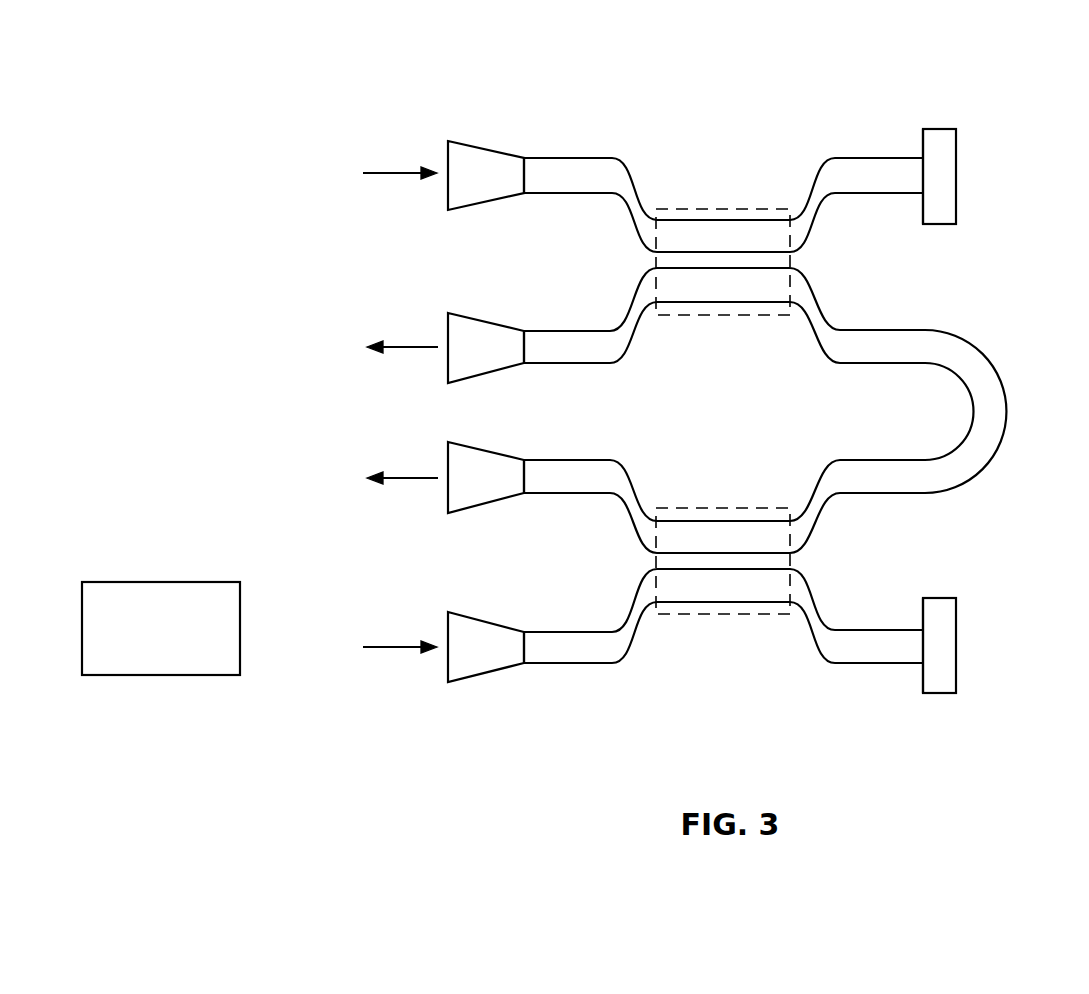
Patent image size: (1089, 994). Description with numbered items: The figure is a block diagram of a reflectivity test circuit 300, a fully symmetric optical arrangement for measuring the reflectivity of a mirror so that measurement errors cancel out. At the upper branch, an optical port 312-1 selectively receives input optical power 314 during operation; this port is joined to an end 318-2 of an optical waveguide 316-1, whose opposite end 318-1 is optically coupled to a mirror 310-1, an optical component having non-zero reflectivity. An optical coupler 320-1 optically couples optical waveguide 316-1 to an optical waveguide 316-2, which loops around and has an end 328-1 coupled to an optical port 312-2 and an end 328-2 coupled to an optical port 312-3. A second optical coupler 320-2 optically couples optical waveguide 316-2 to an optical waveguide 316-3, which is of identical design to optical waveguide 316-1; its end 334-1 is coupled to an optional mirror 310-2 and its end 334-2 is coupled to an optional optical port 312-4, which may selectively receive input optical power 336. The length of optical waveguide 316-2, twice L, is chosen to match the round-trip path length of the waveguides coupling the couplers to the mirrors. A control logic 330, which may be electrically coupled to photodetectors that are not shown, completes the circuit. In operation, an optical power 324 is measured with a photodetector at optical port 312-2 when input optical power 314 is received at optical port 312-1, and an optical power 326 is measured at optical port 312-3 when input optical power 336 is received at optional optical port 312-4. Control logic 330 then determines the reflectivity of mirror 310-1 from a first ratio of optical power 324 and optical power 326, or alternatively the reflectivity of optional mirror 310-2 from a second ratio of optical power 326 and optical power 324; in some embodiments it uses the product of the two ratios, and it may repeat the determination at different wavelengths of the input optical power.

The reflectivity test circuit 300 is at (212, 93).
The mirror 310-1 is at (938, 171).
The optional mirror 310-2 is at (940, 651).
The optical port 312-1 is at (492, 175).
The optical port 312-2 is at (480, 335).
The optical port 312-3 is at (480, 488).
The optional optical port 312-4 is at (493, 647).
The input optical power 314 is at (392, 172).
The optical waveguide 316-1 is at (622, 180).
The optical waveguide 316-2 is at (912, 350).
The optical waveguide 316-3 is at (620, 642).
The end 318-1 is at (923, 124).
The end 318-2 is at (525, 156).
The optical coupler 320-1 is at (790, 262).
The optical coupler 320-2 is at (790, 565).
The optical power 324 is at (393, 345).
The optical power 326 is at (393, 477).
The end 328-1 is at (525, 329).
The end 328-2 is at (525, 457).
The control logic 330 is at (161, 628).
The end 334-1 is at (923, 700).
The end 334-2 is at (525, 666).
The input optical power 336 is at (393, 649).